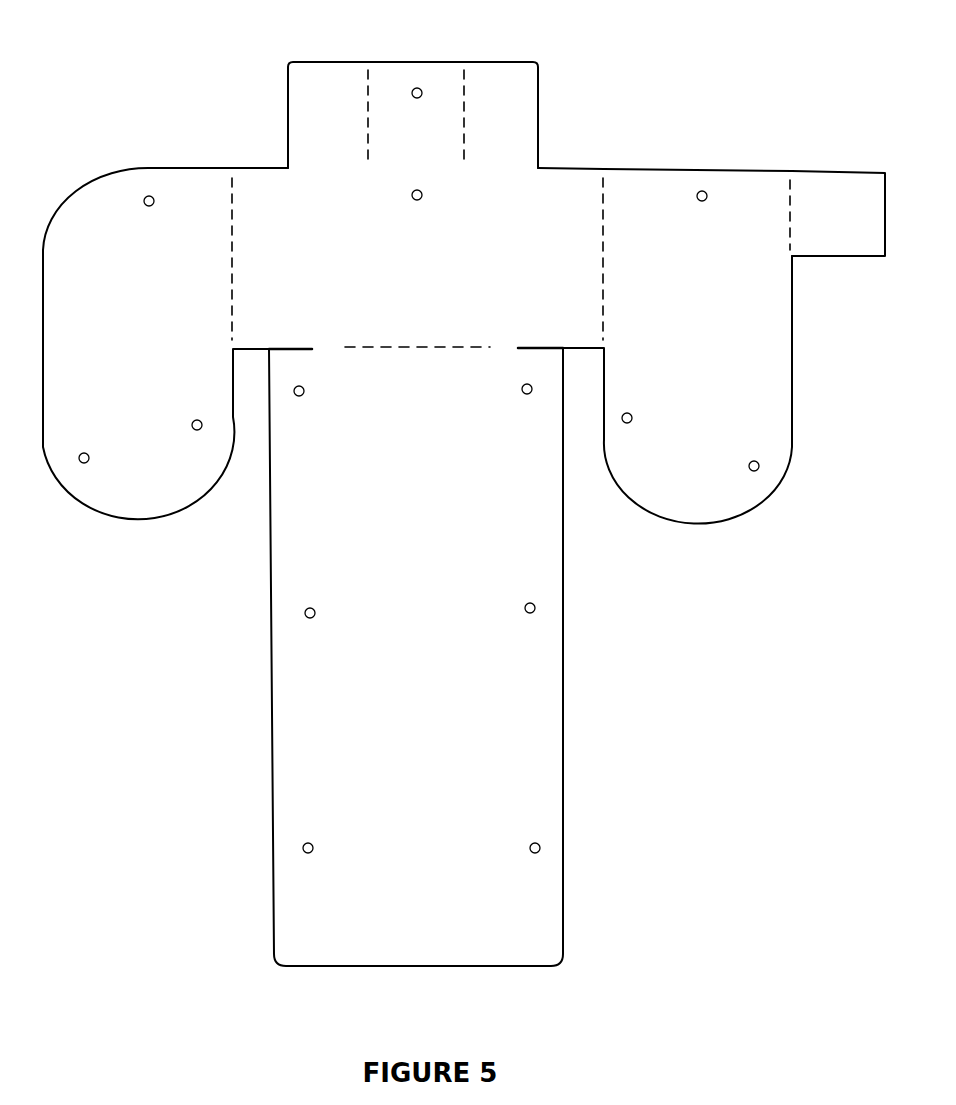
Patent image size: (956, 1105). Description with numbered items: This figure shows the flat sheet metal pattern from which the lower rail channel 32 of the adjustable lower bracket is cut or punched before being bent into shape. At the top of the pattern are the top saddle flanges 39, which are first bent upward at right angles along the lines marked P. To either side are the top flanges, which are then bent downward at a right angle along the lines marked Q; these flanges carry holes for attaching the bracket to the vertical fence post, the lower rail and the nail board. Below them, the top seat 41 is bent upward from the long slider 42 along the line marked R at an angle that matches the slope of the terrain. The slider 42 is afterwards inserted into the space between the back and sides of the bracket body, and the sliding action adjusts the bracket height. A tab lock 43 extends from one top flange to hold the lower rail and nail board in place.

The lower rail channel 32 is at (464, 486).
The top saddle flanges 39 is at (474, 70).
The top seat 41 is at (548, 190).
The slider 42 is at (540, 521).
The tab locks 43 is at (814, 188).